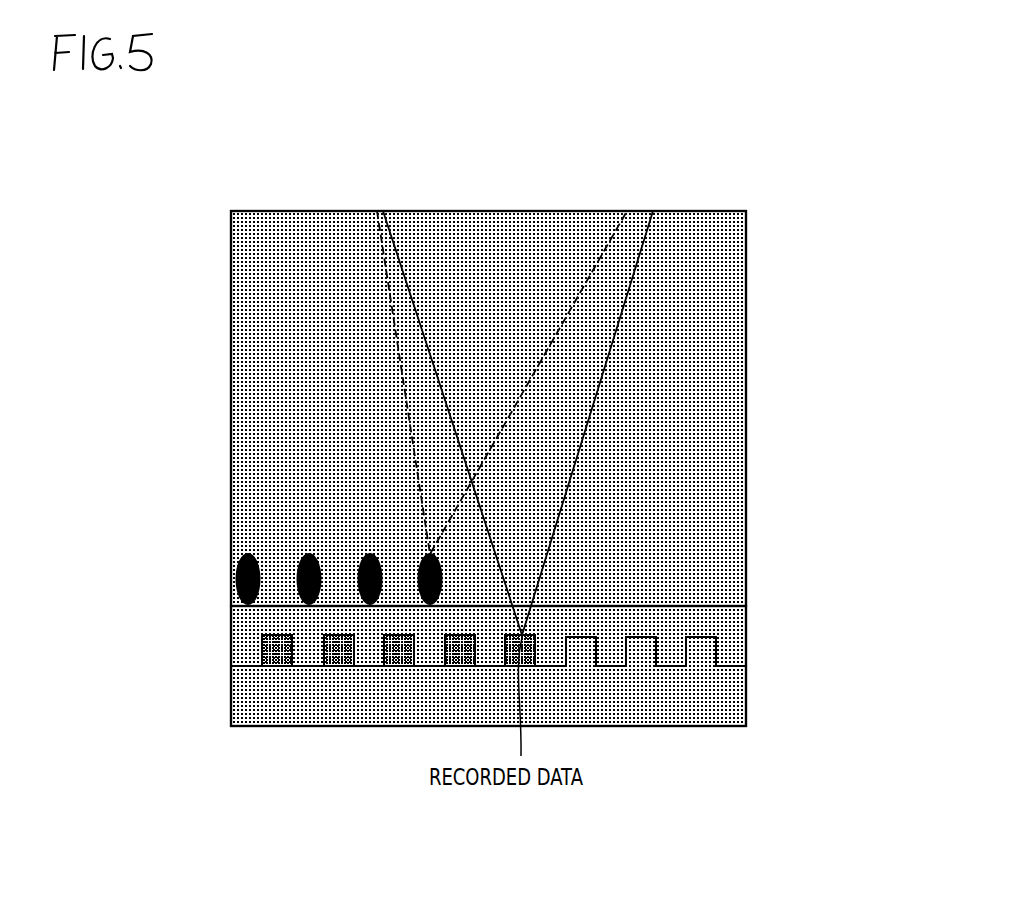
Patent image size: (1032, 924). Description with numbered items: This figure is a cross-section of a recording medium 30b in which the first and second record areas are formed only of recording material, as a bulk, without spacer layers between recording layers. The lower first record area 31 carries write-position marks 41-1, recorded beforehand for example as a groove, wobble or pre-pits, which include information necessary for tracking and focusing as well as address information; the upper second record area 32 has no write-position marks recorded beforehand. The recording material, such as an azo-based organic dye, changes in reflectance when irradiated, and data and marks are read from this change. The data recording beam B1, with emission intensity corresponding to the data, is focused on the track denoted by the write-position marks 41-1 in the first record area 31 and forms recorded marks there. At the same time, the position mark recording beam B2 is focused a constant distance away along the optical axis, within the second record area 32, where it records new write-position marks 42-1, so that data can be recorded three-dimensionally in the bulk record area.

The recording medium 30b is at (236, 164).
The second record area 32 is at (763, 203).
The first record area 31 is at (763, 602).
The write-position marks 41-1 is at (658, 658).
The new write-position marks 42-1 is at (357, 597).
The data recording beam B1 is at (641, 250).
The position mark recording beam B2 is at (588, 251).